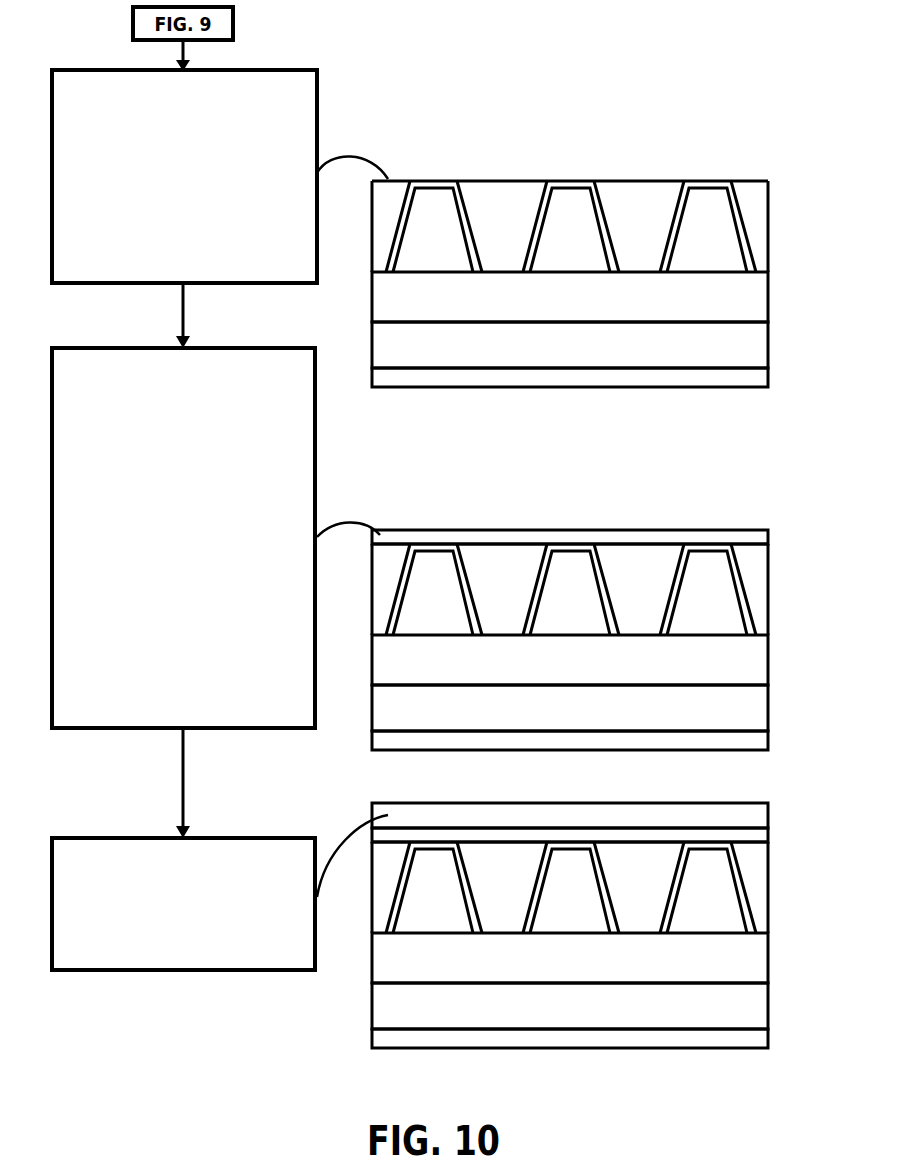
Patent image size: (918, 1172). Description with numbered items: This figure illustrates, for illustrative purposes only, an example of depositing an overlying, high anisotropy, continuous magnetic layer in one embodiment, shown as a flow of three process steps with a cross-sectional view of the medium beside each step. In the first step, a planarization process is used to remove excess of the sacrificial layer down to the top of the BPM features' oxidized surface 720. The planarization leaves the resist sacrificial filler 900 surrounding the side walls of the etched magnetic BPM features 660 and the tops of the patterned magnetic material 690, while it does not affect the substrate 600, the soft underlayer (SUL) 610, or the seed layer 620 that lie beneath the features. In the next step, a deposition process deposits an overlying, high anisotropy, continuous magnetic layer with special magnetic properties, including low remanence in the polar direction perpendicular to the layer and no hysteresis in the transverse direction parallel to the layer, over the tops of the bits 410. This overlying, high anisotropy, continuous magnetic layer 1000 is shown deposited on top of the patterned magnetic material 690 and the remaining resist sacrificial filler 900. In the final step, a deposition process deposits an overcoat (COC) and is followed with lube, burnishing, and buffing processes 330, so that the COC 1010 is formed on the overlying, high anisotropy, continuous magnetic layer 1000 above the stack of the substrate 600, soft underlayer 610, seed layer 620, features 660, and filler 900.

The overcoat deposition, lube, burnishing, and buffing process step 330 is at (63, 853).
The continuous magnetic layer deposition step 410 is at (295, 710).
The substrate 600 is at (760, 378).
The soft underlayer (SUL) 610 is at (760, 350).
The seed layer 620 is at (760, 299).
The etched magnetic BPM features 660 is at (577, 233).
The patterned magnetic material 690 is at (430, 185).
The planarization process step 720 is at (290, 103).
The resist sacrificial filler 900 is at (390, 201).
The overlying, high anisotropy, continuous magnetic layer 1000 is at (758, 537).
The COC (overcoat) 1010 is at (760, 816).